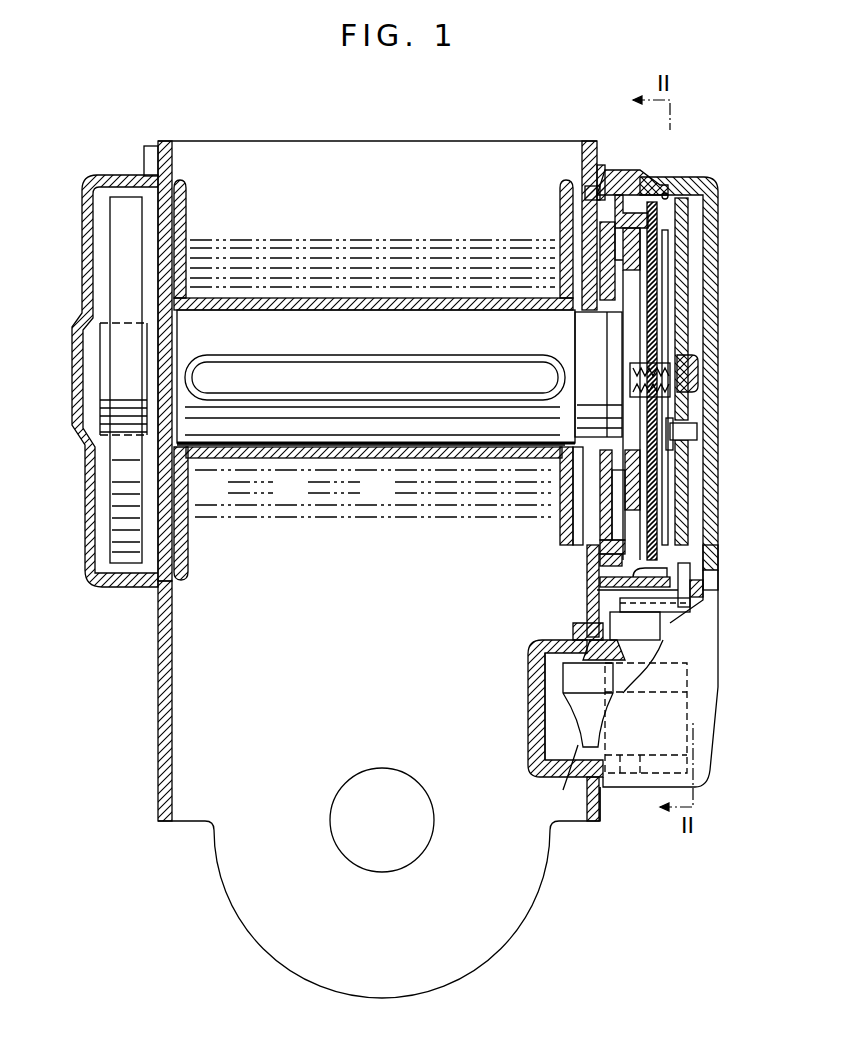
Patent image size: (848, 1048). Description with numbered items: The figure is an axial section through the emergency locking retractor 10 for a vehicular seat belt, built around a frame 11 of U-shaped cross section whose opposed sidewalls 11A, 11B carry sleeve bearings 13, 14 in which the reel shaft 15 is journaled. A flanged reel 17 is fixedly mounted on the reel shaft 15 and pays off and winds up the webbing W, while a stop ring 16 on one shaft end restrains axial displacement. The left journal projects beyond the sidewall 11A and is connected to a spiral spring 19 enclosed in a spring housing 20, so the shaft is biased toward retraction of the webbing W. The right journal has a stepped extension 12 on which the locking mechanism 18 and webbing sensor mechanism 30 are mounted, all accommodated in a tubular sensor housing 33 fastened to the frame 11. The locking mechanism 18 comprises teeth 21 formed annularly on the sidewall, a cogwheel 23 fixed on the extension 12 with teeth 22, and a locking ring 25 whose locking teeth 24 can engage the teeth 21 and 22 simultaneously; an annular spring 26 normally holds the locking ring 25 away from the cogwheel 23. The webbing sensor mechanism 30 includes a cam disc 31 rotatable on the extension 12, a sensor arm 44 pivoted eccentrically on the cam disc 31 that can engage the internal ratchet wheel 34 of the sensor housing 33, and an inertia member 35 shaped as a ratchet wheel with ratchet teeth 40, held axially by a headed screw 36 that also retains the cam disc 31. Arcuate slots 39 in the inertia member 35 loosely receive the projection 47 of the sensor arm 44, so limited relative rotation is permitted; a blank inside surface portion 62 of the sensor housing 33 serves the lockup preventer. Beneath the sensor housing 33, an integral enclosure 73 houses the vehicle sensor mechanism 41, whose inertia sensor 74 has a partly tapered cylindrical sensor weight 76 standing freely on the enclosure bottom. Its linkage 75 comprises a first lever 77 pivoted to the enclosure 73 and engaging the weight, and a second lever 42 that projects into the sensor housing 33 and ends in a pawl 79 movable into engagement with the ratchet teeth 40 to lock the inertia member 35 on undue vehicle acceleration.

The emergency locking retractor 10 is at (444, 132).
The frame 11 is at (293, 138).
The left hand sidewall 11A is at (165, 608).
The right hand sidewall 11B is at (587, 602).
The stepped extension 12 is at (612, 347).
The sleeve bearing 13 is at (193, 443).
The sleeve bearing 14 is at (590, 440).
The reel shaft 15 is at (380, 442).
The stop ring 16 is at (573, 465).
The flanged reel 17 is at (292, 448).
The locking mechanism 18 is at (618, 192).
The spiral spring 19 is at (122, 200).
The spring housing 20 is at (82, 188).
The teeth 21 is at (593, 192).
The teeth 22 is at (605, 544).
The cogwheel 23 is at (605, 500).
The locking teeth 24 is at (622, 568).
The locking ring 25 is at (618, 527).
The annular spring 26 is at (583, 483).
The webbing sensor mechanism 30 is at (692, 250).
The cam disc 31 is at (655, 217).
The sensor housing 33 is at (698, 385).
The internal ratchet wheel 34 is at (646, 185).
The inertia member 35 is at (688, 265).
The headed screw 36 is at (696, 362).
The arcuate slots 39 is at (683, 448).
The ratchet teeth 40 is at (705, 547).
The vehicle sensor mechanism 41 is at (532, 744).
The second lever 42 is at (700, 592).
The sensor arm 44 is at (667, 283).
The projection 47 is at (697, 430).
The blank inside surface portion 62 is at (668, 190).
The vehicle sensor enclosure 73 is at (527, 665).
The inertia sensor 74 is at (567, 710).
The linkage 75 is at (670, 627).
The sensor weight 76 is at (577, 748).
The first lever 77 is at (660, 640).
The pawl 79 is at (690, 565).
The webbing W is at (360, 245).